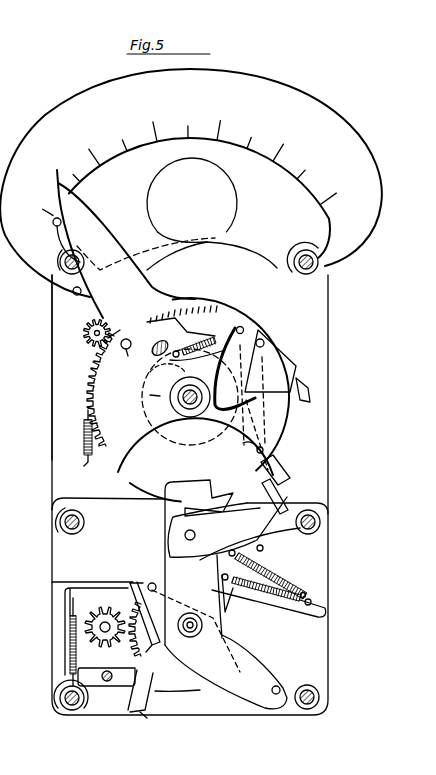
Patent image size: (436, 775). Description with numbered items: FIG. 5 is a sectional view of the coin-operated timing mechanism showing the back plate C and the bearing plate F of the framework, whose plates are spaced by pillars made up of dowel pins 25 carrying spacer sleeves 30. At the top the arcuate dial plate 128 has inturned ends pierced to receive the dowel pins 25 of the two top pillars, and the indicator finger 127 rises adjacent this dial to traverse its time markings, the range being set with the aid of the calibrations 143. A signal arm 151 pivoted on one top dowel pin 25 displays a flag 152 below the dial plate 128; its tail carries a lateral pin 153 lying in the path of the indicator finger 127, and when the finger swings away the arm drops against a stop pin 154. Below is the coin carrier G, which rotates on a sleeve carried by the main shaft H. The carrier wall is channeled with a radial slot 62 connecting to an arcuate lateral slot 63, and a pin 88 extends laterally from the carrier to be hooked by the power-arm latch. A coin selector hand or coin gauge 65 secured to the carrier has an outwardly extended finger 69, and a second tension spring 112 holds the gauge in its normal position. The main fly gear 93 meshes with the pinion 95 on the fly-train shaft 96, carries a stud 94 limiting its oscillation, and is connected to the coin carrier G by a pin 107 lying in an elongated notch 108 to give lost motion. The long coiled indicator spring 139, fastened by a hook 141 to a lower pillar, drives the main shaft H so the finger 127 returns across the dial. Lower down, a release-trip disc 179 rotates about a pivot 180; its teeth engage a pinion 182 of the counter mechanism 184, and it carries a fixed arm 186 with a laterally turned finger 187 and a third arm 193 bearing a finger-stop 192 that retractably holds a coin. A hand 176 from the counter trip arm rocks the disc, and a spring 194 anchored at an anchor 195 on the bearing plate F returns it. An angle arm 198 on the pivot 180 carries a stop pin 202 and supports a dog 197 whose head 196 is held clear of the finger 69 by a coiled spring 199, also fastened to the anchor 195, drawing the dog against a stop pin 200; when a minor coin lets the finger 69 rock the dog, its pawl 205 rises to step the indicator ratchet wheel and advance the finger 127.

The arcuate dial plate 128 is at (333, 124).
The indicator finger 127 is at (100, 210).
The flag 152 is at (244, 206).
The signal arm 151 is at (186, 264).
The lateral pin 153 is at (52, 220).
The stop pin 154 is at (72, 291).
The dowel pin 25 is at (62, 262).
The spacer sleeve 30 is at (318, 262).
The calibrations 143 is at (164, 304).
The second tension spring 112 is at (212, 340).
The coin selector hand 65 is at (246, 326).
The arcuate lateral slot 63 is at (258, 368).
The outwardly extended finger 69 is at (305, 380).
The radial slot 62 is at (296, 395).
The main shaft H is at (182, 400).
The coin carrier G is at (157, 420).
The pin 107 is at (160, 378).
The elongated notch 108 is at (139, 402).
The back plate C is at (56, 405).
The bearing plate F is at (58, 547).
The fly train shaft 96 is at (98, 323).
The pinion 95 is at (94, 344).
The stud 94 is at (124, 351).
The main fly gear 93 is at (96, 380).
The coiled indicator spring 139 is at (86, 458).
The dog head 196 is at (188, 480).
The dog 197 is at (176, 546).
The hand 176 is at (290, 470).
The pawl 205 is at (290, 492).
The pin 88 is at (278, 450).
The stop pin 200 is at (266, 548).
The coiled spring 199 is at (280, 576).
The spring 194 is at (232, 596).
The anchor 195 is at (318, 603).
The laterally turned finger 187 is at (150, 584).
The fixed arm 186 is at (147, 655).
The counter mechanism 184 is at (62, 604).
The pinion 182 is at (118, 614).
The hook 141 is at (84, 703).
The pivot 180 is at (200, 612).
The release-trip disc 179 is at (232, 704).
The angle arm 198 is at (226, 636).
The stop pin 202 is at (282, 684).
The third arm 193 is at (182, 694).
The finger-stop 192 is at (140, 716).